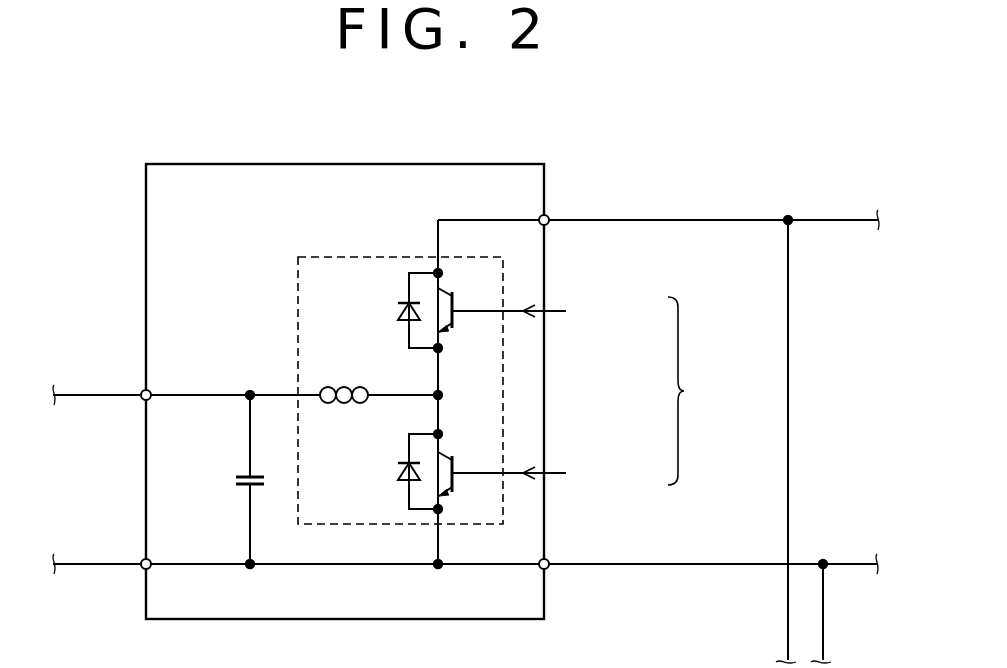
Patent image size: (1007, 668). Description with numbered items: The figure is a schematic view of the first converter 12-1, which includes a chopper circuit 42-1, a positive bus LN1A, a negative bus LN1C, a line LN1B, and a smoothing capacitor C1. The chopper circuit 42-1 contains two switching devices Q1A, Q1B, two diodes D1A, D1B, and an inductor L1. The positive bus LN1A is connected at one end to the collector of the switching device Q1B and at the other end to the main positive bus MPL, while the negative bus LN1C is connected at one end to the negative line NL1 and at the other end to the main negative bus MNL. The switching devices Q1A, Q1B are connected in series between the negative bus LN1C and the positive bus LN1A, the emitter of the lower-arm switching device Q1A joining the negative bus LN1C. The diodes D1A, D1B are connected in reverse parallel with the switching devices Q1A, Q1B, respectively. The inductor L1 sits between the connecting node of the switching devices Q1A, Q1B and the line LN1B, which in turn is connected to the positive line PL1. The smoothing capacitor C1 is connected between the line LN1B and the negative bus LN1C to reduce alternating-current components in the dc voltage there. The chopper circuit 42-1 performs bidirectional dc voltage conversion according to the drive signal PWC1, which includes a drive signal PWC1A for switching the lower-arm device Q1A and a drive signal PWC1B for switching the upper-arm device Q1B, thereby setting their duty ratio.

The first converter 12-1 is at (511, 164).
The chopper circuit 42-1 is at (333, 256).
The positive line PL1 is at (94, 392).
The negative line NL1 is at (93, 561).
The positive bus LN1A is at (488, 205).
The line LN1B is at (235, 384).
The negative bus LN1C is at (345, 552).
The main positive bus MPL is at (854, 216).
The main negative bus MNL is at (854, 560).
The smoothing capacitor C1 is at (243, 475).
The inductor L1 is at (379, 378).
The diode D1A is at (395, 471).
The diode D1B is at (395, 309).
The switching device Q1A is at (465, 472).
The switching device Q1B is at (465, 311).
The drive signal PWC1 is at (712, 391).
The drive signal PWC1A is at (551, 475).
The drive signal PWC1B is at (551, 313).